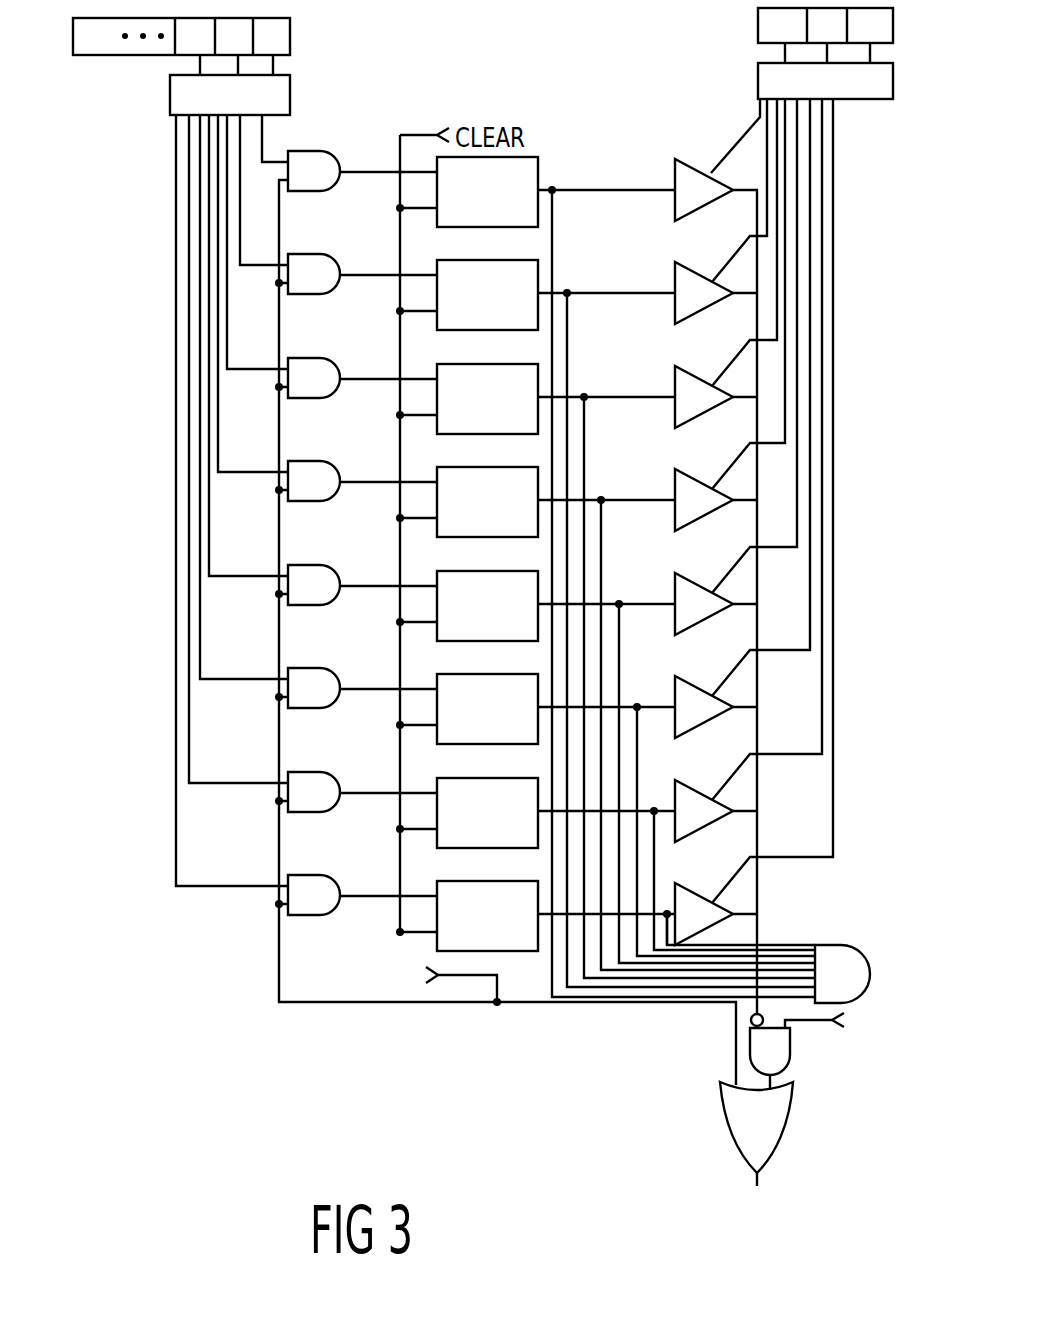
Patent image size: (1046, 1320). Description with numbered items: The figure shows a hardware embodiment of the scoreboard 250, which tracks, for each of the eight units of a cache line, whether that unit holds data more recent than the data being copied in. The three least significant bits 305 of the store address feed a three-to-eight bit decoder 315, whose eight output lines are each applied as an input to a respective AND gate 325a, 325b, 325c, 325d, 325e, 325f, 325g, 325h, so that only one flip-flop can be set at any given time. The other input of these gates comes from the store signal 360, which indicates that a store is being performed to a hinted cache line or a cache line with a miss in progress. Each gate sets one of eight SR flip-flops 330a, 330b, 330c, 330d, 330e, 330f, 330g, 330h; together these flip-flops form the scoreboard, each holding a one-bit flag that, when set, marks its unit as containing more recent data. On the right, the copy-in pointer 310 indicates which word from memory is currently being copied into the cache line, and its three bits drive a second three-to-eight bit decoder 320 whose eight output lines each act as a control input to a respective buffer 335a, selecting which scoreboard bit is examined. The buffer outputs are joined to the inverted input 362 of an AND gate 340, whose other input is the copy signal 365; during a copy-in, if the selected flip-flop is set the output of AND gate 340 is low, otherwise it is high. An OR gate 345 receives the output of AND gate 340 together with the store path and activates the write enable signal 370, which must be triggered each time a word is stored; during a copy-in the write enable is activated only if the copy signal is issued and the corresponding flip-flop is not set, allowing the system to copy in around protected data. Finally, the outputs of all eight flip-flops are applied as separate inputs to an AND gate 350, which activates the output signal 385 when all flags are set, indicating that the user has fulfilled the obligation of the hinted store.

The scoreboard 250 is at (147, 1127).
The low three bits of the store address 305 is at (290, 22).
The copy-in pointer 310 is at (758, 34).
The three-to-eight bit decoder 315 is at (290, 86).
The three-to-eight bit decoder 320 is at (758, 83).
The AND gate 325a is at (298, 151).
The AND gate 325b is at (298, 254).
The AND gate 325c is at (298, 358).
The AND gate 325d is at (298, 461).
The AND gate 325e is at (298, 565).
The AND gate 325f is at (298, 668).
The AND gate 325g is at (298, 772).
The AND gate 325h is at (298, 875).
The SR flip-flop 330a is at (545, 157).
The SR flip-flop 330b is at (528, 260).
The SR flip-flop 330c is at (492, 364).
The SR flip-flop 330d is at (494, 467).
The SR flip-flop 330e is at (494, 571).
The SR flip-flop 330f is at (492, 674).
The SR flip-flop 330g is at (490, 778).
The SR flip-flop 330h is at (486, 881).
The buffer 335a is at (681, 156).
The AND gate 340 is at (791, 1042).
The OR gate 345 is at (773, 1132).
The AND gate 350 is at (835, 945).
The store signal 360 is at (373, 958).
The inverted input 362 is at (709, 931).
The copy signal 365 is at (884, 1036).
The write enable signal 370 is at (810, 1183).
The output signal 385 is at (904, 946).